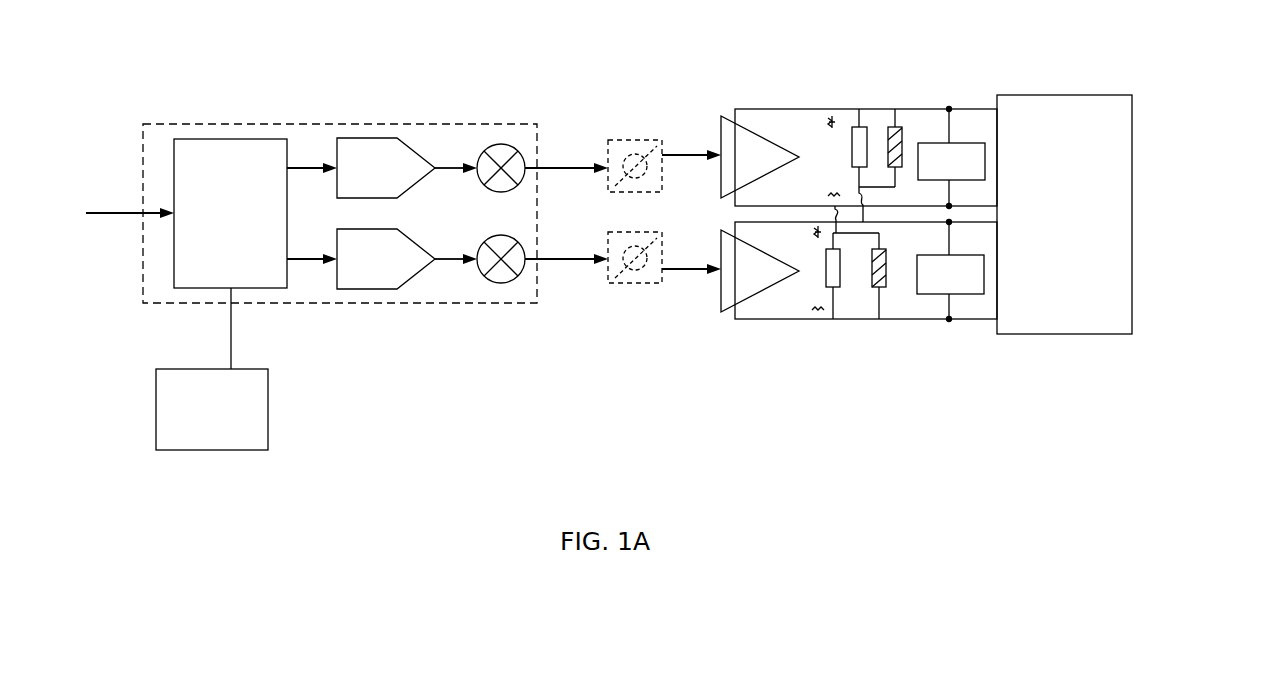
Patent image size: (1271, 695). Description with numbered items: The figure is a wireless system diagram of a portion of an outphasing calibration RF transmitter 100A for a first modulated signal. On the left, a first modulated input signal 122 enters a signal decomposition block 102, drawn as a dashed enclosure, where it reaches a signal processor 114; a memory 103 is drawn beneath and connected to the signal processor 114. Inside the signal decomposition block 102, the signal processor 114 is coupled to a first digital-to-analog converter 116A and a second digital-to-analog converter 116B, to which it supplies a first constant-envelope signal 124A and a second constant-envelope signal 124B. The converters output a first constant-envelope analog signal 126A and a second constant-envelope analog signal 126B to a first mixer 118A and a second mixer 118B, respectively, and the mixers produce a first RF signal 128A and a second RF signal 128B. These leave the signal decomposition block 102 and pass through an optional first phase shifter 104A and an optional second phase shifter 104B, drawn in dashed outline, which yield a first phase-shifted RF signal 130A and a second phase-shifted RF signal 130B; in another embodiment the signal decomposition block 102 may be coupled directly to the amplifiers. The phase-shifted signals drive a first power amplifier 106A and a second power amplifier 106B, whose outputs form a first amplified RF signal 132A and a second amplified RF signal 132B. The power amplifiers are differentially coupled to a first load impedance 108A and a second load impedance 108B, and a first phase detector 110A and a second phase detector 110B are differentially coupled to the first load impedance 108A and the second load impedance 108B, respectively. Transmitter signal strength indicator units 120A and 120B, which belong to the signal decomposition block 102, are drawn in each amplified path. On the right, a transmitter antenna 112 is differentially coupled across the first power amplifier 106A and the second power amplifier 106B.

The outphasing calibration RF transmitter 100A is at (1182, 569).
The signal decomposition block 102 is at (192, 124).
The memory 103 is at (195, 435).
The first phase shifter 104A is at (633, 142).
The second phase shifter 104B is at (627, 300).
The first power amplifier 106A is at (778, 168).
The second power amplifier 106B is at (778, 281).
The first load impedance 108A is at (868, 147).
The second load impedance 108B is at (823, 278).
The first phase detector 110A is at (903, 130).
The second phase detector 110B is at (877, 288).
The transmitter antenna 112 is at (1047, 255).
The signal processor 114 is at (213, 255).
The first digital-to-analog converter 116A is at (399, 178).
The second digital-to-analog converter 116B is at (399, 269).
The first mixer 118A is at (503, 145).
The second mixer 118B is at (507, 282).
The transmitter signal strength indicator unit 120A is at (925, 172).
The transmitter signal strength indicator unit 120B is at (924, 285).
The first modulated input signal 122 is at (105, 213).
The first constant-envelope signal 124A is at (303, 167).
The second constant-envelope signal 124B is at (322, 263).
The first constant-envelope analog signal 126A is at (452, 167).
The second constant-envelope analog signal 126B is at (463, 263).
The first RF signal 128A is at (562, 165).
The second RF signal 128B is at (575, 260).
The first phase-shifted RF signal 130A is at (683, 157).
The second phase-shifted RF signal 130B is at (688, 269).
The first amplified RF signal 132A is at (793, 109).
The second amplified RF signal 132B is at (763, 322).